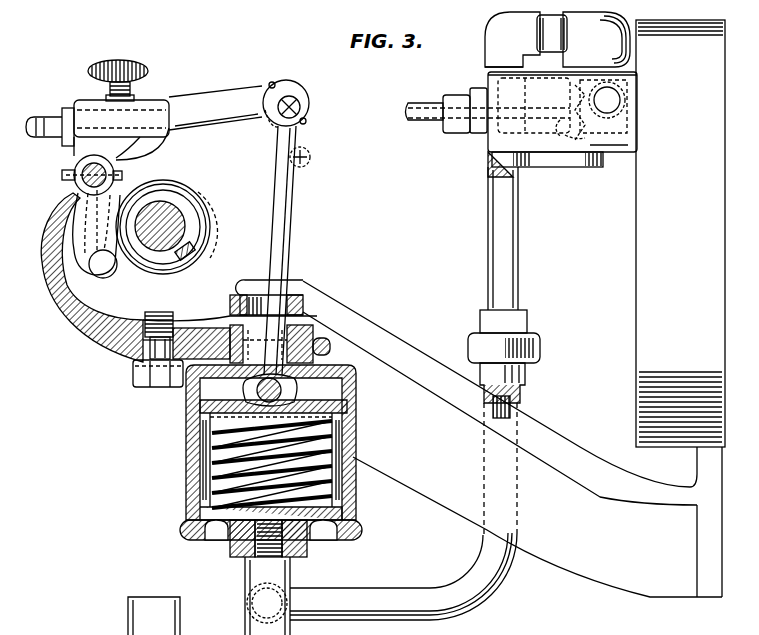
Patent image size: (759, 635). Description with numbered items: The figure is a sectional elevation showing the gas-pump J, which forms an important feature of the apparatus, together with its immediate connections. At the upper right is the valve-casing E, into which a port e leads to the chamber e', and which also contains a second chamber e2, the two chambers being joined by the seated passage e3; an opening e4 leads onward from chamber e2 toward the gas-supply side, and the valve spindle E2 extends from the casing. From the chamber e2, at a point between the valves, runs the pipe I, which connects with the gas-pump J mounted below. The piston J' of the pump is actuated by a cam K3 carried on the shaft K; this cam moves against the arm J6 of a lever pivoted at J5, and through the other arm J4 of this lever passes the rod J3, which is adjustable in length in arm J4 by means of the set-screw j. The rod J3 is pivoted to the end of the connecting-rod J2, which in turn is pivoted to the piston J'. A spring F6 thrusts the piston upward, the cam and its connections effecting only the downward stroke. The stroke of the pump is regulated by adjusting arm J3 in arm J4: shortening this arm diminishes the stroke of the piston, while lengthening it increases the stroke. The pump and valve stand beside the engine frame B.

The set-screw j is at (130, 63).
The arm J4 is at (154, 100).
The rod J3 is at (239, 105).
The connecting-rod J2 is at (288, 213).
The lever pivot J5 is at (74, 171).
The arm J6 is at (110, 268).
The shaft K is at (173, 210).
The cam K3 is at (205, 246).
The gas-pump J is at (259, 461).
The piston J' is at (233, 428).
The spring F6 is at (212, 506).
The pipe I is at (412, 323).
The valve-casing E is at (562, 103).
The spindle E2 is at (423, 110).
The opening e4 is at (614, 100).
The chamber e' is at (547, 133).
The seated passage e3 is at (568, 143).
The chamber e2 is at (609, 139).
The port e is at (545, 172).
The bed frame B is at (680, 308).